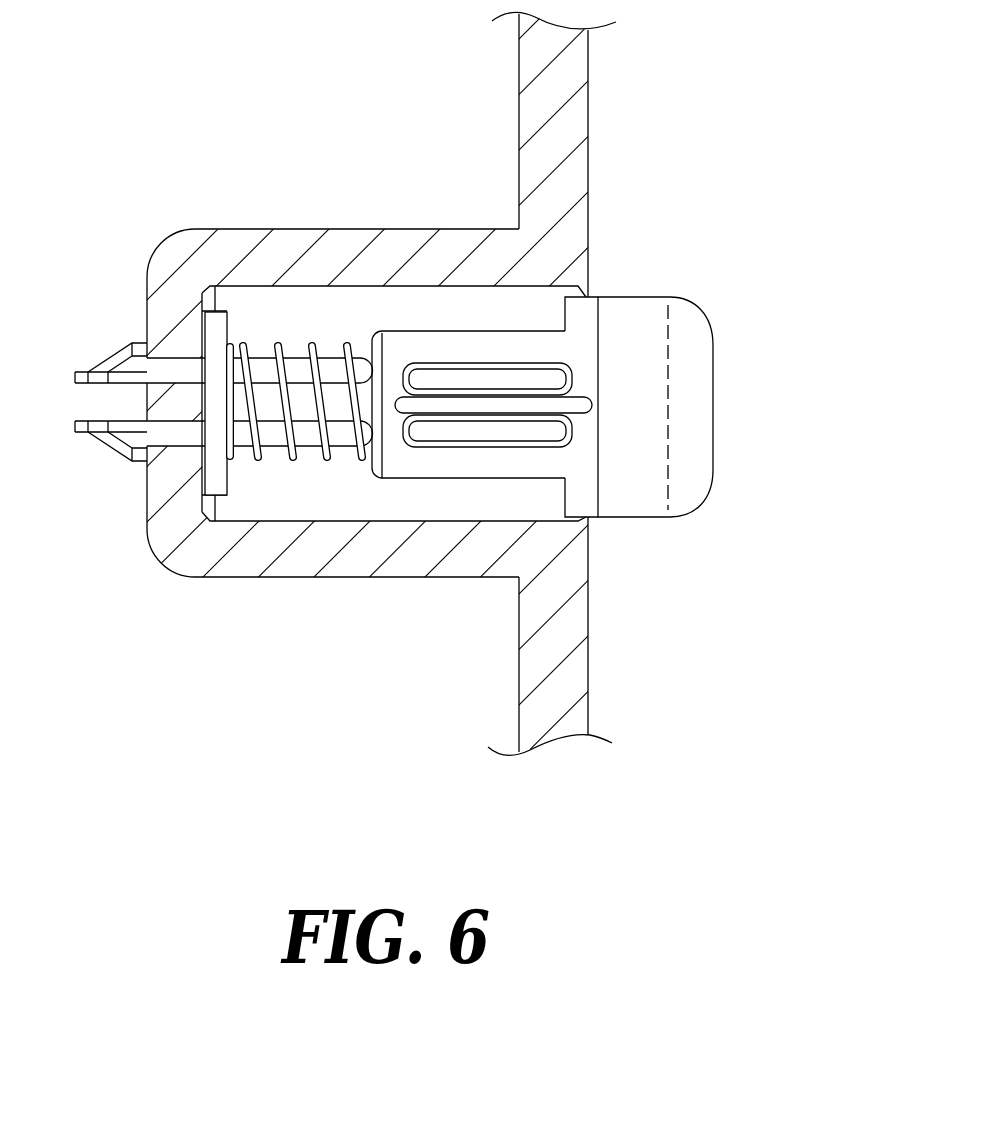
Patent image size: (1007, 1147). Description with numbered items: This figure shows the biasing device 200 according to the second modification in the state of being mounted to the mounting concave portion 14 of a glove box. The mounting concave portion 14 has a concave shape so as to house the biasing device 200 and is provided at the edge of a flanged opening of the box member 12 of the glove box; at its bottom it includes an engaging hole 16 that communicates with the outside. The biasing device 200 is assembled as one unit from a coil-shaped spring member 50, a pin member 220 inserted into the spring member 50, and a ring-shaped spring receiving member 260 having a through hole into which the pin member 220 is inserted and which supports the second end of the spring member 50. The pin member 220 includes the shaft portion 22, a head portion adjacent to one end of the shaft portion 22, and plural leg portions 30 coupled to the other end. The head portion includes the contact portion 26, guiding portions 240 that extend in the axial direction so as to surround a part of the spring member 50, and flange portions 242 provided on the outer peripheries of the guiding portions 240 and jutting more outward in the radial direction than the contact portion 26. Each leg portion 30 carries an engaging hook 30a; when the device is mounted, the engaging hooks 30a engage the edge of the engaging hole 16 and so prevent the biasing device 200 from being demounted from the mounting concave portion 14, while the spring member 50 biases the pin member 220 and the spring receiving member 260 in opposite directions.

The box member 12 is at (576, 88).
The mounting concave portion 14 is at (341, 287).
The engaging hole 16 is at (163, 352).
The shaft portion 22 is at (343, 437).
The contact portion 26 is at (700, 344).
The leg portions 30 is at (107, 352).
The engaging hook 30a is at (140, 462).
The spring member 50 is at (292, 460).
The biasing device 200 is at (265, 460).
The pin member 220 is at (394, 353).
The guiding portions 240 is at (453, 342).
The flange portions 242 is at (477, 402).
The spring receiving member 260 is at (224, 318).